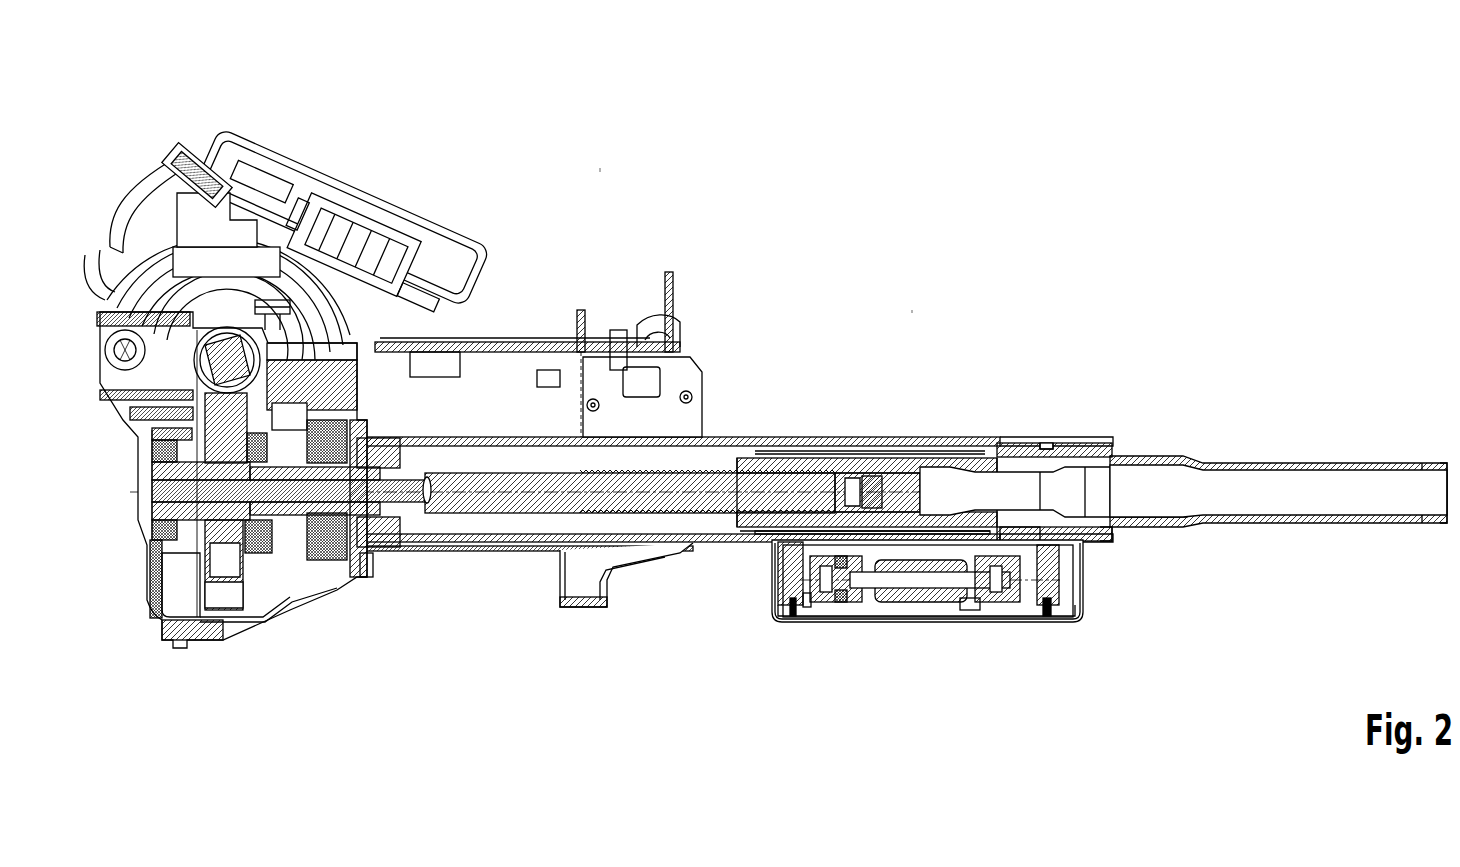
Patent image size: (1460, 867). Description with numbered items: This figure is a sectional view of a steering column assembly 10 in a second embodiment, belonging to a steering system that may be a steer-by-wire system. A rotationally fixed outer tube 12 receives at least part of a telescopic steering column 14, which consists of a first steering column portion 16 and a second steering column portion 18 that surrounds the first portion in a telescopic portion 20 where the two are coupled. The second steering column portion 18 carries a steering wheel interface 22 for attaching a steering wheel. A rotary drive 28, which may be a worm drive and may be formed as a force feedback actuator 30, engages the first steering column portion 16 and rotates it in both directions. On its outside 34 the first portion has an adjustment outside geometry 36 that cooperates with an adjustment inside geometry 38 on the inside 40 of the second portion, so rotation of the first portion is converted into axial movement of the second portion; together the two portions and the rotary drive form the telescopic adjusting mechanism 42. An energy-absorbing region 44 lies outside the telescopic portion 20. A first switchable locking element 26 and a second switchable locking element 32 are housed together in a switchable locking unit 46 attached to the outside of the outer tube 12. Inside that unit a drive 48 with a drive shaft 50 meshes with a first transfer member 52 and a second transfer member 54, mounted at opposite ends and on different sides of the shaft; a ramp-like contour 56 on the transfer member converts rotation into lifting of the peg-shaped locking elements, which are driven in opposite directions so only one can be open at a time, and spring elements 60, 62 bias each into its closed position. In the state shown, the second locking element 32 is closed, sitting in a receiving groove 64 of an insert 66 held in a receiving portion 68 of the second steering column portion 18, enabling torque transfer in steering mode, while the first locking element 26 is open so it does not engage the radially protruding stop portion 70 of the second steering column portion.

The steering column assembly 10 is at (600, 165).
The outer tube 12 is at (1093, 441).
The telescopic steering column 14 is at (605, 480).
The first steering column portion 16 is at (467, 498).
The second steering column portion 18 is at (1152, 460).
The telescopic portion 20 is at (964, 372).
The steering wheel interface 22 is at (1398, 438).
The first switchable locking element 26 is at (788, 578).
The rotary drive 28 is at (283, 300).
The force feedback actuator 30 is at (252, 290).
The second switchable locking element 32 is at (1050, 555).
The outside 34 is at (721, 470).
The adjustment outside geometry 36 is at (863, 470).
The adjustment inside geometry 38 is at (847, 480).
The inside 40 is at (900, 478).
The telescopic adjusting mechanism 42 is at (913, 306).
The energy-absorbing region 44 is at (465, 430).
The switchable locking unit 46 is at (787, 640).
The drive 48 is at (945, 592).
The drive shaft 50 is at (967, 594).
The first transfer member 52 is at (840, 600).
The second transfer member 54 is at (988, 588).
The ramp-like contour 56 is at (830, 605).
The spring element 60 is at (779, 619).
The spring element 62 is at (1055, 610).
The receiving groove 64 is at (1050, 441).
The insert 66 is at (1110, 533).
The receiving portion 68 is at (1013, 521).
The stop portion 70 is at (762, 531).